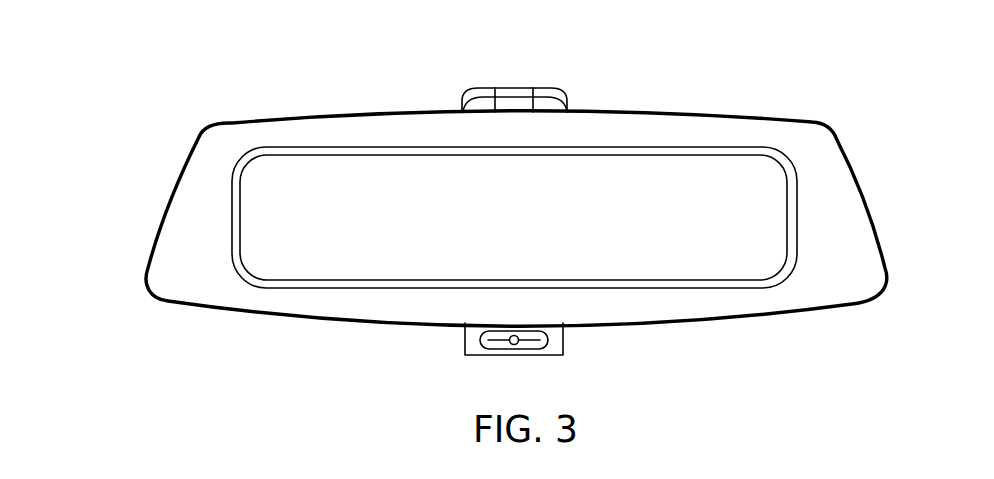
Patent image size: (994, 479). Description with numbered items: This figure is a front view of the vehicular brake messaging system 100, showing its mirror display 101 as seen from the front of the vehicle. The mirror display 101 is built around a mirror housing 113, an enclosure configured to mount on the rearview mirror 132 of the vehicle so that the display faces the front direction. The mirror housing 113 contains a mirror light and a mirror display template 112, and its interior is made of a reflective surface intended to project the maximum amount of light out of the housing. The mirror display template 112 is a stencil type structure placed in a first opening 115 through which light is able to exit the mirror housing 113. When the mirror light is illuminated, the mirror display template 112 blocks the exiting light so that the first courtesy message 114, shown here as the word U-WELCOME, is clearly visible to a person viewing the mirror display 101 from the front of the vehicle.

The vehicular brake messaging system 100 is at (96, 83).
The mirror display 101 is at (276, 112).
The mirror display template 112 is at (690, 268).
The mirror housing 113 is at (785, 175).
The first courtesy message 114 is at (675, 193).
The first opening 115 is at (625, 177).
The rearview mirror 132 is at (557, 88).